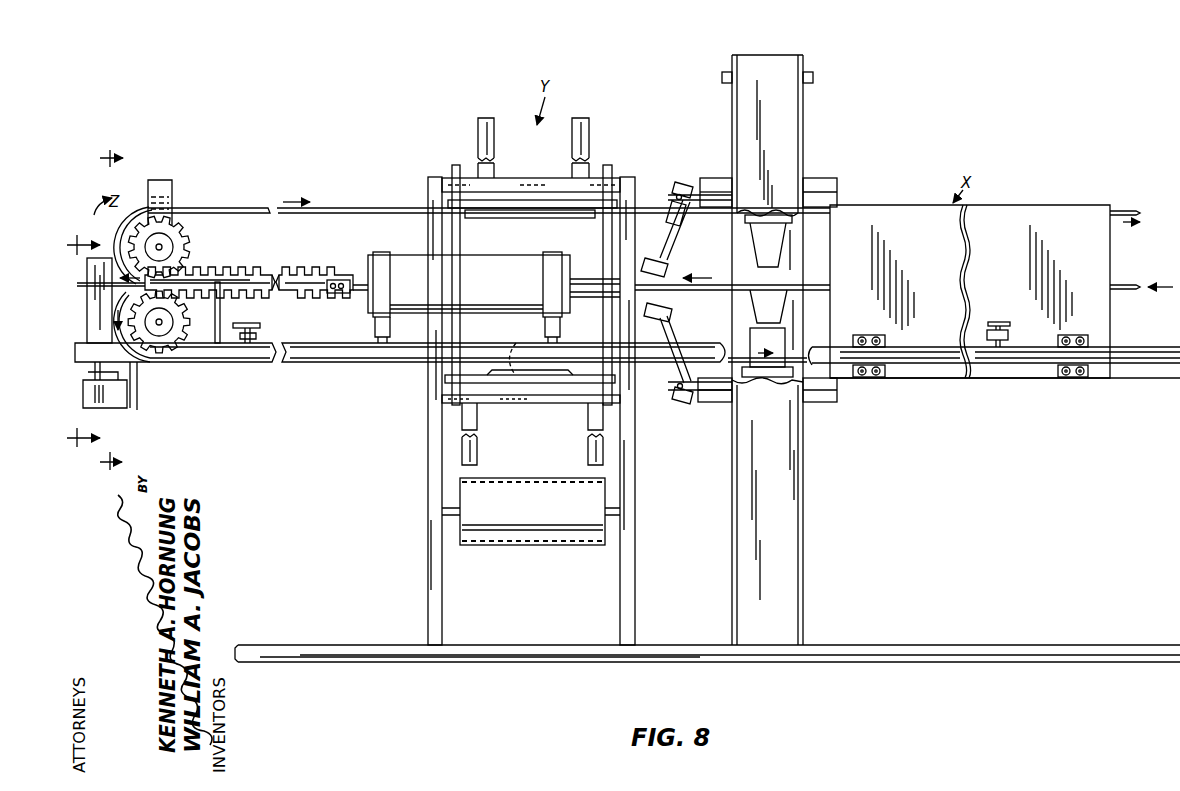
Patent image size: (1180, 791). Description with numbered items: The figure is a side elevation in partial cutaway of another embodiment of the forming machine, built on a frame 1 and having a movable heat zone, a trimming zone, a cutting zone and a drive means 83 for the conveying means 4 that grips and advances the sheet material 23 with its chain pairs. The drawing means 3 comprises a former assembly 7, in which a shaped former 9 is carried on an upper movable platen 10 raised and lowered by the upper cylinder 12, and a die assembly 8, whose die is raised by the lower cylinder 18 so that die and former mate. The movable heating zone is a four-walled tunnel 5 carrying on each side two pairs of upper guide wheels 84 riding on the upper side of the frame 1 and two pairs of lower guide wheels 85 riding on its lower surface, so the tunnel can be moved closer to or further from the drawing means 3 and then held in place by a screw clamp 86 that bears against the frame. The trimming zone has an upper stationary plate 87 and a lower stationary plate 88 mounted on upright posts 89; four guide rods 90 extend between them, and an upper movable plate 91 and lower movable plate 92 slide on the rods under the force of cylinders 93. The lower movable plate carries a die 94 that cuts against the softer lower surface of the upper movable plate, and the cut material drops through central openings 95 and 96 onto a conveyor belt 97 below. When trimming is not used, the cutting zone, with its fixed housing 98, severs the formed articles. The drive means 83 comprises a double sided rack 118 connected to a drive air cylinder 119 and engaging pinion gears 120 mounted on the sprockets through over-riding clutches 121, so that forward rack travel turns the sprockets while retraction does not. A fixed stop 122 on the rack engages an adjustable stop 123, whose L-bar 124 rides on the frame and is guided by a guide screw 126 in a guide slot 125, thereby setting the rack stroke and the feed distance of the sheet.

The frame 1 is at (927, 365).
The drawing means 3 is at (722, 157).
The conveying means 4 is at (376, 207).
The four-walled tunnel 5 is at (999, 256).
The former assembly 7 is at (752, 243).
The die assembly 8 is at (750, 340).
The shaped former 9 is at (108, 312).
The upper movable platen 10 is at (83, 341).
The upper cylinder 12 is at (803, 138).
The lower cylinder 18 is at (803, 467).
The sheet material 23 is at (111, 294).
The drive means 83 is at (300, 267).
The upper guide wheels 84 is at (876, 336).
The lower guide wheels 85 is at (876, 377).
The screw clamp 86 is at (1005, 323).
The upper stationary plate 87 is at (532, 185).
The lower stationary plate 88 is at (533, 403).
The upright posts 89 is at (428, 467).
The guide rods 90 is at (460, 232).
The upper movable plate 91 is at (527, 208).
The lower movable plate 92 is at (583, 380).
The pneumatic or hydraulic cylinders 93 is at (494, 139).
The die 94 is at (528, 372).
The central opening 95 is at (510, 350).
The central opening 96 is at (580, 399).
The conveyor belt 97 is at (530, 480).
The fixed housing 98 is at (96, 292).
The double sided rack 118 is at (249, 282).
The drive air cylinder 119 is at (475, 291).
The pinion gears 120 is at (173, 231).
The over-riding clutches 121 is at (171, 248).
The fixed stop 122 is at (347, 293).
The adjustable stop 123 is at (262, 333).
The L-bar 124 is at (258, 350).
The guide slot 125 is at (322, 355).
The guide screw 126 is at (226, 338).